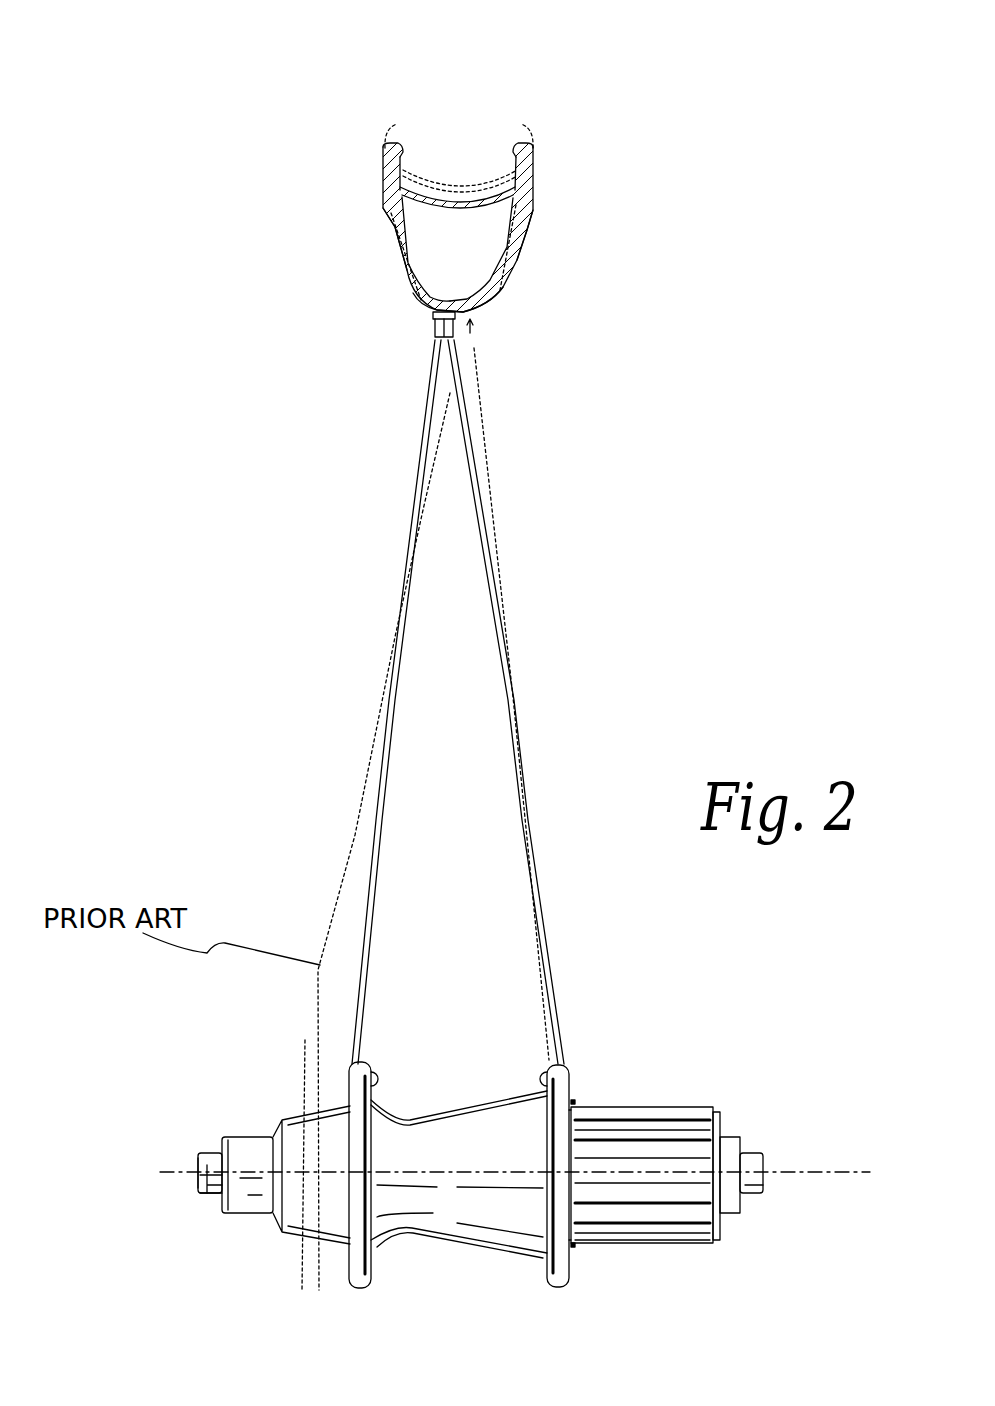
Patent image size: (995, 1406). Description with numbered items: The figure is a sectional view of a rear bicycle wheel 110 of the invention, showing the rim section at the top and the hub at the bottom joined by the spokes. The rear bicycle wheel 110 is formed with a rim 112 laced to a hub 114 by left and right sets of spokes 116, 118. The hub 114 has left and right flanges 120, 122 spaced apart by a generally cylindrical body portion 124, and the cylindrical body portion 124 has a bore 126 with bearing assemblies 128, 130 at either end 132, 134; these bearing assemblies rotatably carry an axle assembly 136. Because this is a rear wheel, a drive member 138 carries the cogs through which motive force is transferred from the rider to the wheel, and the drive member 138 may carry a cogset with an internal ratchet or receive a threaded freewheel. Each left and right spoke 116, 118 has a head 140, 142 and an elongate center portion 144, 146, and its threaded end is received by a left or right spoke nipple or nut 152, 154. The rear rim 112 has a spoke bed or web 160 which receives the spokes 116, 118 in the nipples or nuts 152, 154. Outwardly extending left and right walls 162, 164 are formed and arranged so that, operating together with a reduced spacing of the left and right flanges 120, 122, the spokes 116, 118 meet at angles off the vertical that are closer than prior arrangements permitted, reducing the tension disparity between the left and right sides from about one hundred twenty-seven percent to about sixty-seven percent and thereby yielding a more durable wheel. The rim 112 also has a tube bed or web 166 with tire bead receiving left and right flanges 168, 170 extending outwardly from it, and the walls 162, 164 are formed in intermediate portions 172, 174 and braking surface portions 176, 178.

The rear bicycle wheel 110 is at (763, 1163).
The rim 112 is at (398, 145).
The hub 114 is at (482, 1158).
The left spoke 116 is at (319, 713).
The right spoke 118 is at (548, 713).
The left flange 120 is at (350, 1173).
The right flange 122 is at (547, 1157).
The cylindrical body portion 124 is at (453, 1200).
The bore 126 is at (200, 1175).
The bearing assembly 128 is at (208, 1193).
The bearing assembly 130 is at (740, 1190).
The end 132 is at (270, 1163).
The end 134 is at (573, 1108).
The axle assembly 136 is at (200, 1177).
The drive member 138 is at (737, 1165).
The head 140 is at (377, 1073).
The head 142 is at (542, 1075).
The elongate center portion 144 is at (397, 747).
The elongate center portion 146 is at (503, 673).
The left spoke nipple 152 is at (432, 322).
The right spoke nipple 154 is at (475, 326).
The spoke bed 160 is at (503, 290).
The left wall 162 is at (398, 253).
The right wall 164 is at (533, 208).
The tube bed 166 is at (460, 202).
The left tire bead receiving flange 168 is at (385, 147).
The right tire bead receiving flange 170 is at (535, 149).
The intermediate portion 172 is at (410, 290).
The intermediate portion 174 is at (520, 254).
The braking surface portion 176 is at (393, 186).
The braking surface portion 178 is at (537, 177).